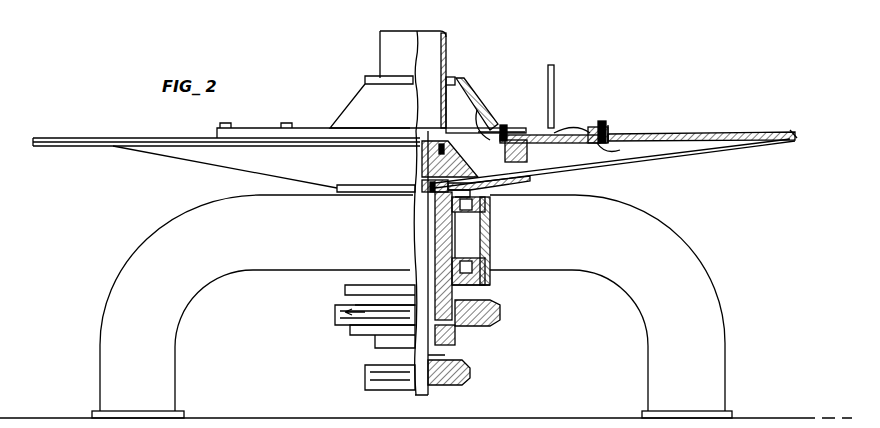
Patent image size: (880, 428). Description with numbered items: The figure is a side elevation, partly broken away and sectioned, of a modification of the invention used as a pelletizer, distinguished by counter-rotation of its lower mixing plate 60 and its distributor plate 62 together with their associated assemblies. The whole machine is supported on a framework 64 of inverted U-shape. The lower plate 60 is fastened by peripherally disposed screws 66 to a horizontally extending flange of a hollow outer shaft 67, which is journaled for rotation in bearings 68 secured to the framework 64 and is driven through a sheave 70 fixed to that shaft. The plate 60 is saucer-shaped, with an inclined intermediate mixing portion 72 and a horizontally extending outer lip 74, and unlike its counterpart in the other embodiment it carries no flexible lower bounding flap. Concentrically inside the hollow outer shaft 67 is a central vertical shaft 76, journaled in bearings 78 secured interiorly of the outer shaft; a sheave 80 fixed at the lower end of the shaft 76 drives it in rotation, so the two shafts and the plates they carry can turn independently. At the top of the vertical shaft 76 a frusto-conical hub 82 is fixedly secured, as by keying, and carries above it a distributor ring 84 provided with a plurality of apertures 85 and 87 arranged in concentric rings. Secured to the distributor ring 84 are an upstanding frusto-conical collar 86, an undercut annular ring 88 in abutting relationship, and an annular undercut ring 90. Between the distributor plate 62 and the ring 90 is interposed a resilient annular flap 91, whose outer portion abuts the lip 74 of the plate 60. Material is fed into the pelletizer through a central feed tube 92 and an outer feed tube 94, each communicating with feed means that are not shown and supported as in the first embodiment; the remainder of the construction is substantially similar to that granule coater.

The lower mixing plate 60 is at (179, 163).
The distributor plate 62 is at (541, 136).
The framework 64 is at (662, 318).
The screws 66 is at (470, 189).
The hollow outer shaft 67 is at (445, 230).
The bearings 68 is at (478, 208).
The sheave 70 is at (496, 320).
The inclined intermediate mixing portion 72 is at (632, 152).
The horizontally extending outer lip 74 is at (745, 143).
The central vertical shaft 76 is at (400, 350).
The bearings 78 is at (422, 185).
The sheave 80 is at (462, 383).
The frusto-conical hub 82 is at (421, 140).
The distributor ring 84 is at (580, 143).
The apertures 85 is at (470, 112).
The upstanding frusto-conical collar 86 is at (478, 112).
The apertures 87 is at (612, 145).
The undercut annular ring 88 is at (502, 149).
The annular undercut ring 90 is at (592, 127).
The resilient annular flap 91 is at (698, 136).
The central feed tube 92 is at (446, 40).
The outer feed tube 94 is at (556, 78).